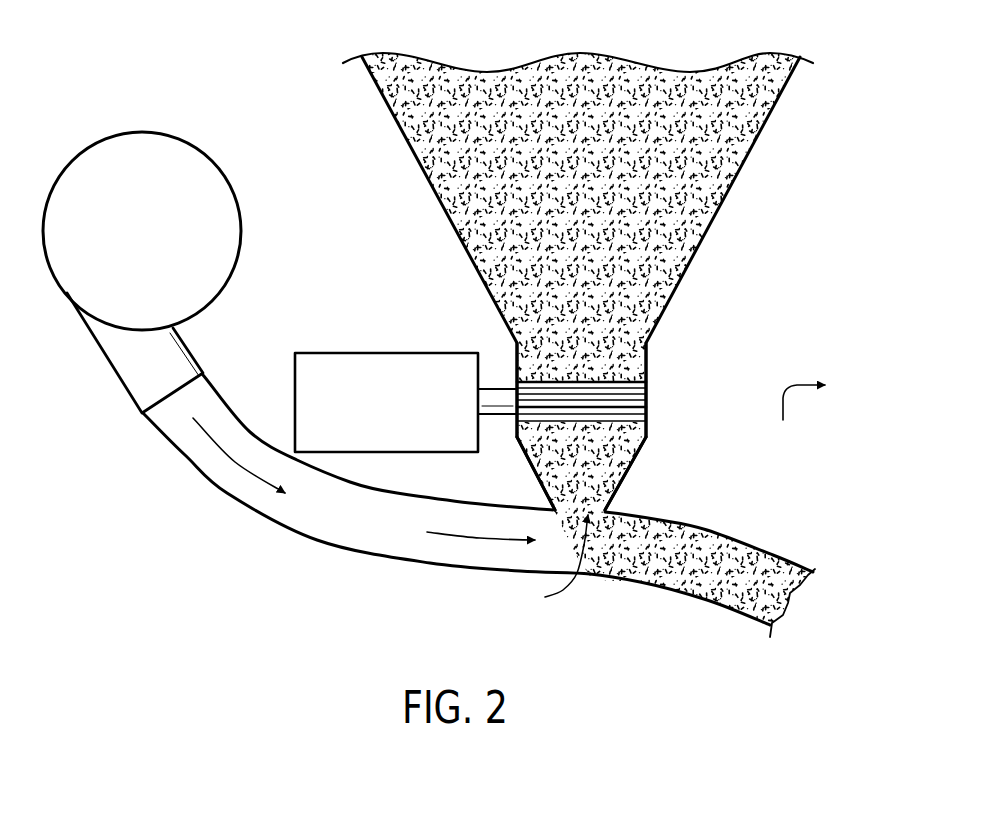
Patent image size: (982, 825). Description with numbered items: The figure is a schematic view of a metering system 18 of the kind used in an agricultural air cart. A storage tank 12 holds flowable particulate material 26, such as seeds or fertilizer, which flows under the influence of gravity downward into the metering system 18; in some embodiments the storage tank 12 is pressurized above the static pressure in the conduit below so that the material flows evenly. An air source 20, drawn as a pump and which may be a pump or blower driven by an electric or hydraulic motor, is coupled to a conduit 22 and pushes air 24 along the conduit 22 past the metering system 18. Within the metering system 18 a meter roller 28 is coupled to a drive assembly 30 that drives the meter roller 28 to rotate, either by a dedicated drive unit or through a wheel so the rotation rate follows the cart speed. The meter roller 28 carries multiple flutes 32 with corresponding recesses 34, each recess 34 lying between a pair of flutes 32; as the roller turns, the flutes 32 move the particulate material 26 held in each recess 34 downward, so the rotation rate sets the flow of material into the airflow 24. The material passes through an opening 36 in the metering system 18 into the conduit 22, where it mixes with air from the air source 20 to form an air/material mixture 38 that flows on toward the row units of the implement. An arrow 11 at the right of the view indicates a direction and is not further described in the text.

The direction of material flow 11 is at (798, 420).
The storage tank 12 is at (386, 102).
The metering system 18 is at (660, 370).
The air source 20 is at (138, 133).
The conduit 22 is at (317, 540).
The air 24 is at (228, 462).
The flowable particulate material 26 is at (750, 117).
The meter roller 28 is at (612, 427).
The drive assembly 30 is at (386, 353).
The flutes 32 is at (613, 400).
The recesses 34 is at (637, 412).
The opening 36 is at (551, 565).
The air/material mixture 38 is at (707, 583).